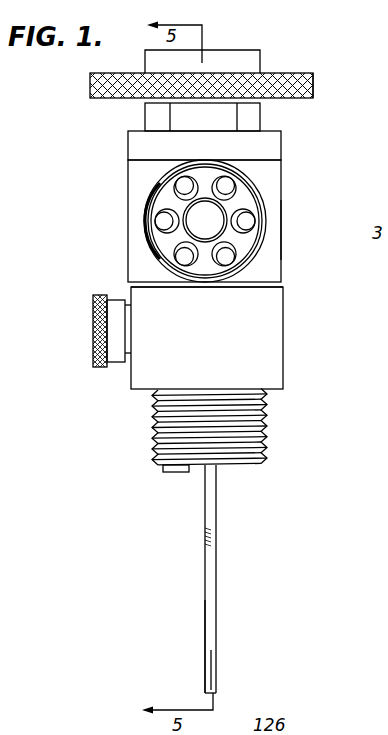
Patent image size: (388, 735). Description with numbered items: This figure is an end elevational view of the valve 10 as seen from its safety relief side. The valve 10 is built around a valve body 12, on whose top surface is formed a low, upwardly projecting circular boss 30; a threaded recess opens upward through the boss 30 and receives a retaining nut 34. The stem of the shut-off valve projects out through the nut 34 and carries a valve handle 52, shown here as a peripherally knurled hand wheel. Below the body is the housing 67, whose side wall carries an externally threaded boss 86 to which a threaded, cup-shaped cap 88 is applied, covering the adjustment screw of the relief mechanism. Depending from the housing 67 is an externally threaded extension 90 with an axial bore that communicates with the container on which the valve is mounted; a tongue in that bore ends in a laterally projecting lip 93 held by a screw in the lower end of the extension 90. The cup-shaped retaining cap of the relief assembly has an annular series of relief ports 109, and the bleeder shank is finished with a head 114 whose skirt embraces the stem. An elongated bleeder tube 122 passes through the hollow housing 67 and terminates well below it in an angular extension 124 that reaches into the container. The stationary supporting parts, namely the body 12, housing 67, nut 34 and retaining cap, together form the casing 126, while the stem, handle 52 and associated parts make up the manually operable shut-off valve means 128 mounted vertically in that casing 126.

The valve 10 is at (124, 181).
The valve body 12 is at (282, 187).
The circular boss 30 is at (281, 143).
The retaining nut 34 is at (261, 119).
The valve handle 52 is at (292, 65).
The housing 67 is at (283, 342).
The externally threaded boss 86 is at (121, 316).
The cup-shaped cap 88 is at (100, 343).
The externally threaded extension 90 is at (264, 438).
The lip 93 is at (172, 472).
The relief ports 109 is at (178, 192).
The head 114 is at (226, 239).
The bleeder tube 122 is at (216, 490).
The angular extension 124 is at (217, 610).
The casing 126 is at (287, 229).
The shut-off valve means 128 is at (318, 81).